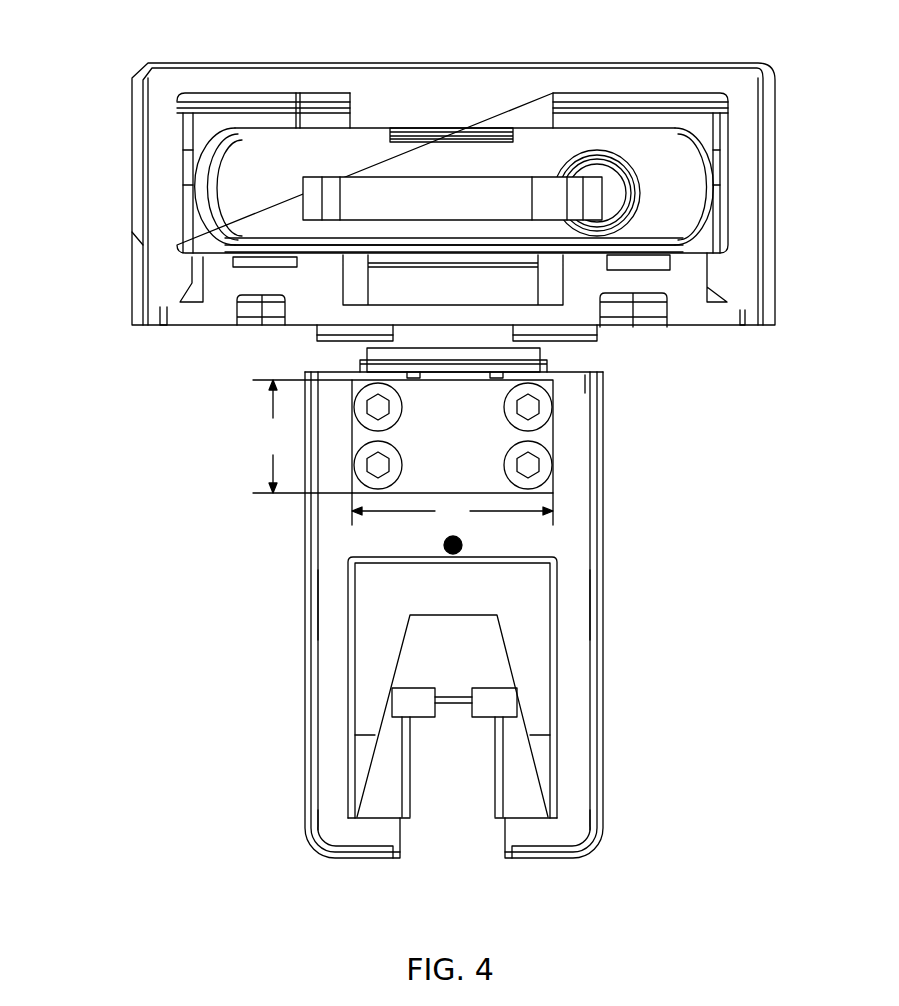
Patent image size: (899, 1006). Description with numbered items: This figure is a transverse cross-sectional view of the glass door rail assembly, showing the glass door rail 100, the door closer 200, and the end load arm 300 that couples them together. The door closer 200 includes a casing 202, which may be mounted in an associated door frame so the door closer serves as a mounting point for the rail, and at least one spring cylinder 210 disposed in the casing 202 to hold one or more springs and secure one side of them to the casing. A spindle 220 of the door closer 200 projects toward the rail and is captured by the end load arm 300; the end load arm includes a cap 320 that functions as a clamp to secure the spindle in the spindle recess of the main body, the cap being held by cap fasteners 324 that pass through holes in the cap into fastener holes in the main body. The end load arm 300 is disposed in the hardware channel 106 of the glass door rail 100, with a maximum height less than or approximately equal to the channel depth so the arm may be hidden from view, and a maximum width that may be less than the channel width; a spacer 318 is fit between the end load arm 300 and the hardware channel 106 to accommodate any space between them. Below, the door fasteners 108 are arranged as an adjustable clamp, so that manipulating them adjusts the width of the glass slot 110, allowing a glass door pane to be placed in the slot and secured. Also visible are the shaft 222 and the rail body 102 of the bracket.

The glass door rail 100 is at (268, 668).
The bracket body 102 is at (600, 730).
The hardware channel 106 is at (560, 488).
The door fasteners 108 is at (468, 597).
The glass slot 110 is at (410, 817).
The door closer 200 is at (118, 266).
The casing 202 is at (772, 77).
The spring cylinder 210 is at (335, 162).
The spindle 220 is at (545, 372).
The shaft 222 is at (355, 193).
The end load arm 300 is at (348, 368).
The spacer 318 is at (352, 430).
The cap 320 is at (440, 388).
The cap fasteners 324 is at (380, 407).